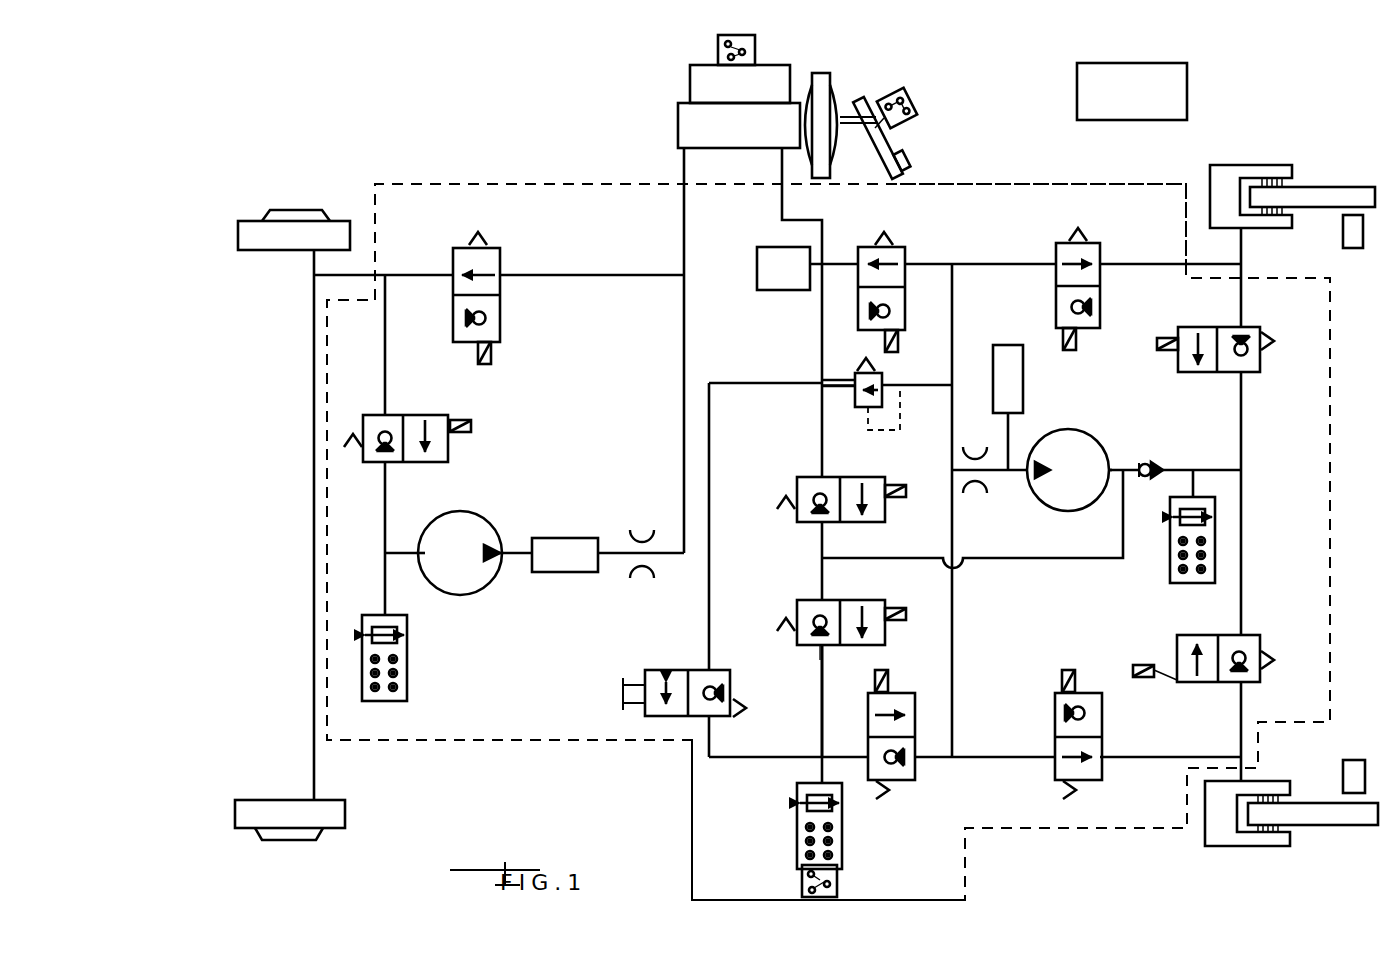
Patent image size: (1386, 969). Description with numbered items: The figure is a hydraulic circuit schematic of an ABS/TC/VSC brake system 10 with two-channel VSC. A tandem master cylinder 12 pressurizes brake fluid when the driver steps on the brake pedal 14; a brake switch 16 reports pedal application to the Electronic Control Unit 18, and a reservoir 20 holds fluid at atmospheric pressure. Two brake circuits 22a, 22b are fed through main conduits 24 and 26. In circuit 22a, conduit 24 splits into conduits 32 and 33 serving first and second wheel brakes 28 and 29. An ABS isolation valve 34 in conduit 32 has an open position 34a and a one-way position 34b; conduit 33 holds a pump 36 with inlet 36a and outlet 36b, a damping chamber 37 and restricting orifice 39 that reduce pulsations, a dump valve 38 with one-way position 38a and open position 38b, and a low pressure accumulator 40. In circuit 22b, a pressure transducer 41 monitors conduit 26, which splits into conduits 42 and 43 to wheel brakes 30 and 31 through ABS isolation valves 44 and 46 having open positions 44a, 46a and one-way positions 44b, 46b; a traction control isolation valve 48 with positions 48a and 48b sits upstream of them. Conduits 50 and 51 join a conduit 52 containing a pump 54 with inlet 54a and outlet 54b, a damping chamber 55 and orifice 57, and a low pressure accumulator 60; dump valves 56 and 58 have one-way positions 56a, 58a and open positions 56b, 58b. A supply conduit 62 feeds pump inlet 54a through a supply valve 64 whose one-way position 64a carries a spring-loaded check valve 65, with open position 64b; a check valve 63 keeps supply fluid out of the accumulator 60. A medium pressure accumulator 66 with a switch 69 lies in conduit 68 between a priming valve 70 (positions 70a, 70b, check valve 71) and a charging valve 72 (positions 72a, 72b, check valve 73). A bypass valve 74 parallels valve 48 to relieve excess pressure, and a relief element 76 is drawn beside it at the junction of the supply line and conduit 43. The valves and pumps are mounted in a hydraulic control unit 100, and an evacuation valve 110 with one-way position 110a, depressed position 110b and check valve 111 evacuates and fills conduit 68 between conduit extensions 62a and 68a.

The brake system 10 is at (548, 100).
The tandem master cylinder 12 is at (678, 122).
The brake pedal 14 is at (895, 162).
The brake switch 16 is at (920, 110).
The Electronic Control Unit 18 is at (1188, 90).
The reservoir 20 is at (690, 82).
The first brake circuit 22a is at (568, 252).
The second brake circuit 22b is at (1015, 252).
The main fluid conduit 24 is at (684, 203).
The main fluid conduit 26 is at (783, 200).
The first wheel brake 28 is at (262, 250).
The second wheel brake 29 is at (253, 800).
The first wheel brake 30 is at (1262, 165).
The second wheel brake 31 is at (1268, 782).
The conduit 32 is at (604, 278).
The conduit 33 is at (684, 395).
The ABS isolation valve 34 is at (469, 298).
The first open position 34a is at (453, 272).
The second position 34b is at (453, 320).
The pump 36 is at (478, 558).
The pump inlet 36a is at (432, 522).
The pump outlet 36b is at (506, 545).
The damping chamber 37 is at (575, 538).
The dump valve 38 is at (404, 438).
The first one-way position 38a is at (372, 462).
The second open position 38b is at (427, 462).
The restricting orifice 39 is at (642, 528).
The low pressure accumulator 40 is at (408, 668).
The master cylinder pressure transducer 41 is at (770, 292).
The conduit 42 is at (986, 268).
The conduit 43 is at (955, 300).
The first ABS isolation valve 44 is at (1105, 288).
The first open position 44a is at (1100, 262).
The second position 44b is at (1100, 318).
The second ABS isolation valve 46 is at (1076, 734).
The first open position 46a is at (1100, 765).
The second position 46b is at (1056, 706).
The traction control isolation valve 48 is at (885, 277).
The first open position 48a is at (860, 258).
The second position 48b is at (900, 328).
The conduit 50 is at (1243, 410).
The conduit 51 is at (1243, 603).
The conduit 52 is at (1170, 470).
The pump 54 is at (1082, 454).
The pump inlet 54a is at (1110, 465).
The pump outlet 54b is at (1027, 478).
The damping chamber 55 is at (1023, 382).
The first dump valve 56 is at (1232, 347).
The first one-way position 56a is at (1245, 372).
The second open position 56b is at (1200, 372).
The restricting orifice 57 is at (989, 460).
The second dump valve 58 is at (1224, 667).
The first one-way position 58a is at (1243, 682).
The second open position 58b is at (1197, 682).
The low pressure accumulator 60 is at (1170, 568).
The supply conduit 62 is at (822, 428).
The conduit extension 62a is at (710, 400).
The one-way check valve 63 is at (1143, 480).
The supply valve 64 is at (835, 501).
The first one-way position 64a is at (816, 482).
The second open position 64b is at (873, 522).
The spring-loaded check valve 65 is at (815, 526).
The medium pressure accumulator 66 is at (842, 832).
The conduit 68 is at (822, 720).
The conduit extension 68a is at (785, 760).
The switch 69 is at (838, 880).
The priming valve 70 is at (835, 629).
The first one-way position 70a is at (812, 645).
The second open position 70b is at (878, 645).
The spring-loaded check valve 71 is at (838, 645).
The charging valve 72 is at (932, 740).
The first one-way position 72a is at (916, 752).
The second open position 72b is at (930, 695).
The spring-loaded check valve 73 is at (920, 762).
The bypass valve 74 is at (848, 380).
The relief valve 76 is at (905, 385).
The hydraulic control unit 100 is at (535, 745).
The evacuation valve 110 is at (696, 708).
The first one-way position 110a is at (731, 698).
The second depressed position 110b is at (640, 670).
The spring-loaded check valve 111 is at (712, 672).